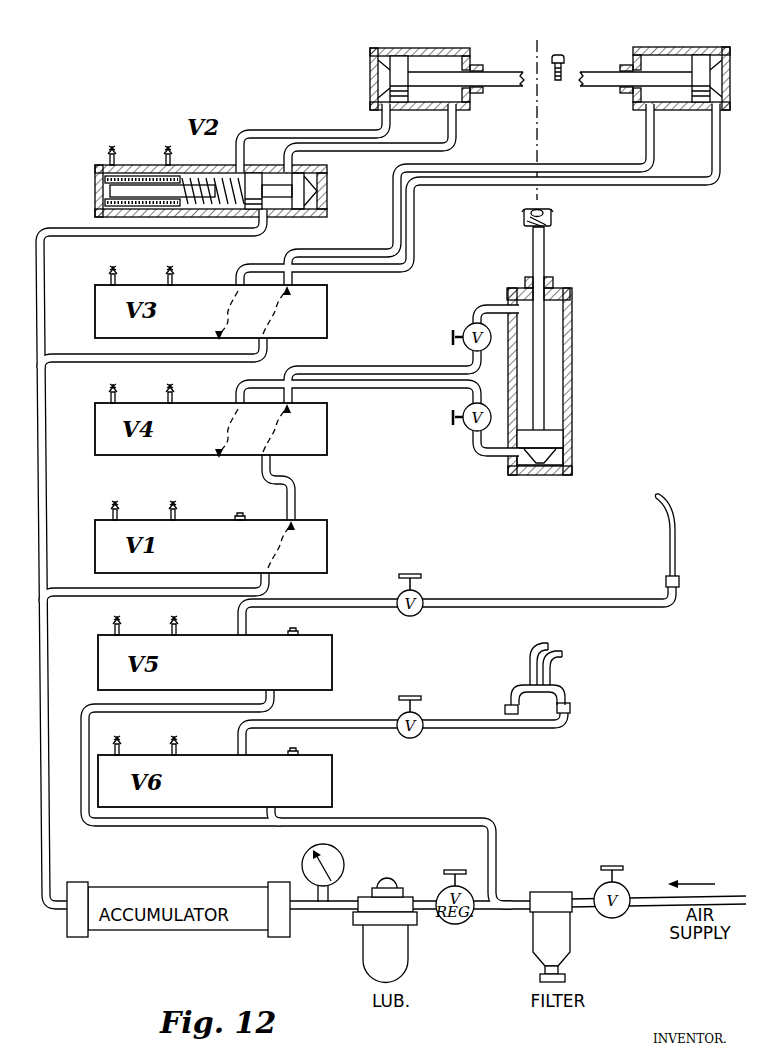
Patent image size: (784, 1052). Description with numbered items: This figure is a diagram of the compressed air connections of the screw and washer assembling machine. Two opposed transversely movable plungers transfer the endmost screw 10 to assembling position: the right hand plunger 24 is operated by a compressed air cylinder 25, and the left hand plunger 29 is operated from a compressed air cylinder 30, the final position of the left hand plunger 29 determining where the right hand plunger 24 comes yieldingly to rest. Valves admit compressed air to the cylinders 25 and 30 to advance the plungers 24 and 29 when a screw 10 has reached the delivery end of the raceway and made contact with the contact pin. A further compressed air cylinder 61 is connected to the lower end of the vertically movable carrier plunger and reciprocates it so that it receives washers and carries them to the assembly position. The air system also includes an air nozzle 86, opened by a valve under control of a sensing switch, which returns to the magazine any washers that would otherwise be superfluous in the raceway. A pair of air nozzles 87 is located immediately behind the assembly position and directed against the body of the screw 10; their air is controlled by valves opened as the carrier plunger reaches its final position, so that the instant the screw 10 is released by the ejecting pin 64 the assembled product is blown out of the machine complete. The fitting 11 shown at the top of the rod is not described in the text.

The screw 10 is at (557, 54).
The nut on rod 11 is at (555, 211).
The right hand plunger 24 is at (605, 86).
The compressed air cylinder 25 is at (726, 62).
The left hand plunger 29 is at (510, 86).
The compressed air cylinder 30 is at (370, 70).
The compressed air cylinder 61 is at (575, 361).
The ejecting pin 64 is at (540, 256).
The air nozzle 86 is at (668, 498).
The air nozzles 87 is at (528, 657).